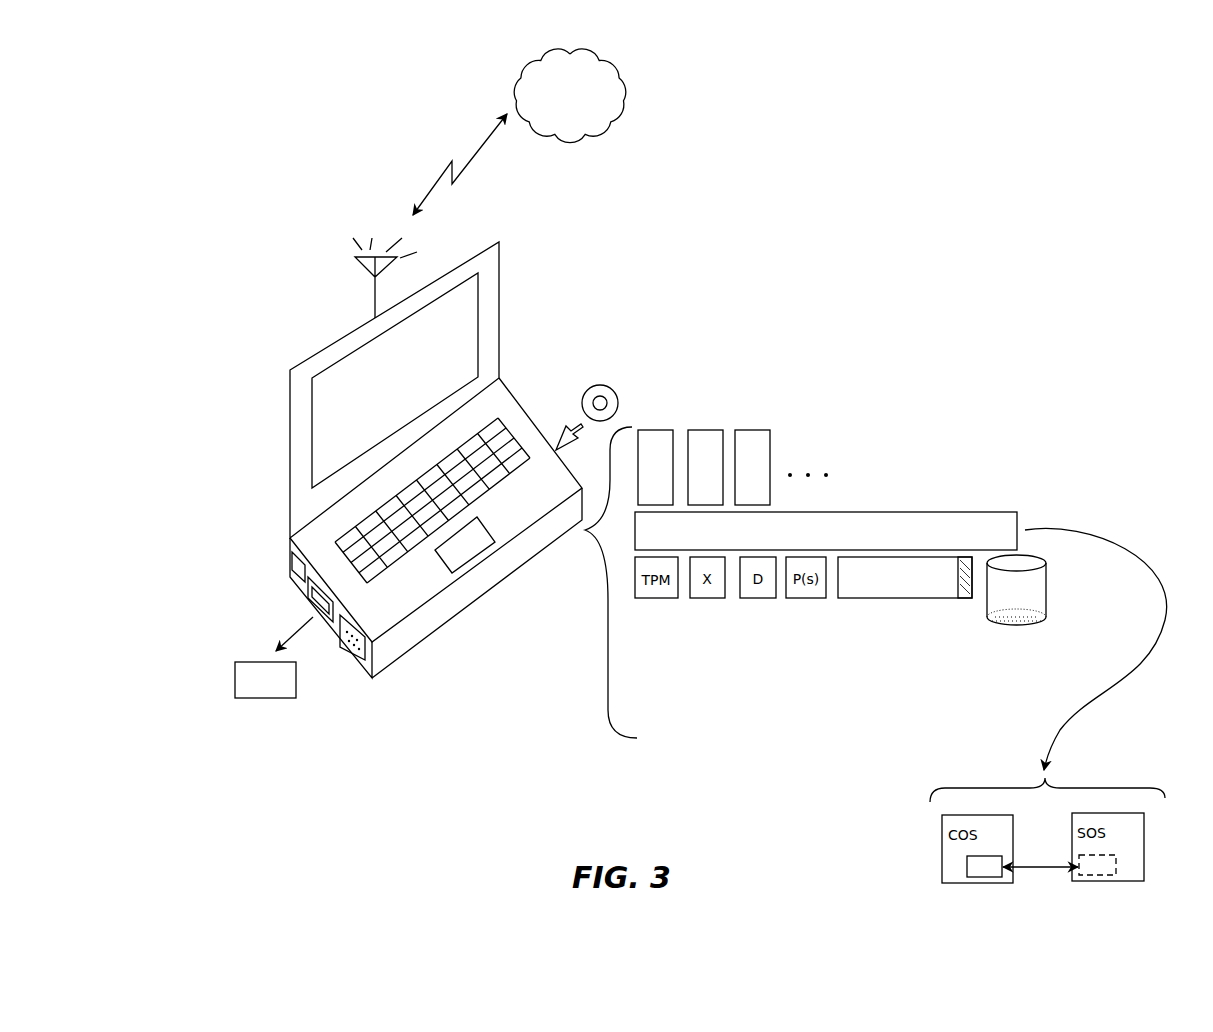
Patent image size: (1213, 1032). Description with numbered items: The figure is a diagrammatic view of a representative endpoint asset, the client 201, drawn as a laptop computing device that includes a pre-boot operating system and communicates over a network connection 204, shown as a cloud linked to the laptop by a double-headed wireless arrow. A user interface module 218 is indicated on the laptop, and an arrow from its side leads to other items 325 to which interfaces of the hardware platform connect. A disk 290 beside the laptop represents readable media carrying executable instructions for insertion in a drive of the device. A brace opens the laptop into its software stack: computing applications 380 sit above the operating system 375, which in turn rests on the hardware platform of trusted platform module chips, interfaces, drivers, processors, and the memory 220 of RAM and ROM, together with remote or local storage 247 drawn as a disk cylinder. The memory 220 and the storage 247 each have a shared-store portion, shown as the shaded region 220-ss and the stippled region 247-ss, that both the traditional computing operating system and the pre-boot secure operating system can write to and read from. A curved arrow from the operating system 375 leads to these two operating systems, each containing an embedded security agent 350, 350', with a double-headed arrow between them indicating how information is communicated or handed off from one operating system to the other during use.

The client 201 is at (272, 332).
The network connection 204 is at (612, 53).
The user interface module 218 is at (300, 536).
The memory 220 is at (915, 611).
The shared portion of memory 220-ss is at (968, 600).
The remote or local storage 247 is at (1044, 613).
The shared portion of storage 247-ss is at (1020, 627).
The disks 290 is at (588, 385).
The other items 325 is at (282, 699).
The security agent 350 is at (984, 892).
The security agent 350' is at (1100, 892).
The operating system 375 is at (1020, 516).
The computing applications 380 is at (973, 437).